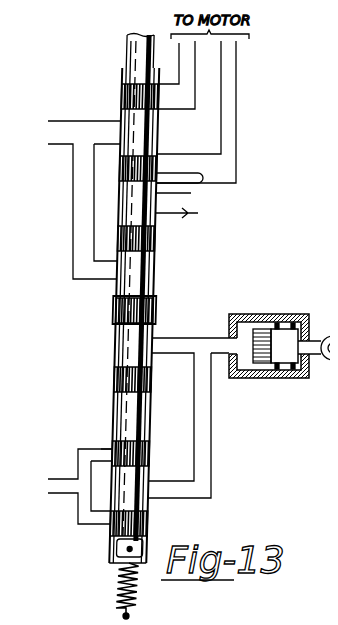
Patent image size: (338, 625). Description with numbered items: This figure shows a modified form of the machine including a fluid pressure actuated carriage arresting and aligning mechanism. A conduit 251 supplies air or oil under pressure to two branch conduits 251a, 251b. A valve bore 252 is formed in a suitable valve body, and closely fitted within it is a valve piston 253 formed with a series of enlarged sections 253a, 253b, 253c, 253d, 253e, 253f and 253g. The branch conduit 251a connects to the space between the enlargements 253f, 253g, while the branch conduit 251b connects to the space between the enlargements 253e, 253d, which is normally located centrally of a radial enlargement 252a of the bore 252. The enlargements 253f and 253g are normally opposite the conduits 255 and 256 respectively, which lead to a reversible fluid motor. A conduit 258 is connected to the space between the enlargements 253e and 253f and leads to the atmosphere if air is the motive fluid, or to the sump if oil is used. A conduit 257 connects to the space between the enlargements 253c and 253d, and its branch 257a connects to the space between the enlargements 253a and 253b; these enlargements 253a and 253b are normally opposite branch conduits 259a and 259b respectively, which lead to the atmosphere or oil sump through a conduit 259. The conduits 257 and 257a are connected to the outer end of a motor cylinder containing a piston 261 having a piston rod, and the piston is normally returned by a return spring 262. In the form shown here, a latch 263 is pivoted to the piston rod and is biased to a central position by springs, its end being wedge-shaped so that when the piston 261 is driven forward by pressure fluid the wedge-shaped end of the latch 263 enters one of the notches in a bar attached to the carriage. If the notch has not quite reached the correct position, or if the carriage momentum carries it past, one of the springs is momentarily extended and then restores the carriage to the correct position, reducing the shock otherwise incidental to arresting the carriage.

The conduit 251 is at (65, 118).
The branch conduit 251a is at (108, 120).
The branch conduit 251b is at (96, 278).
The valve bore 252 is at (110, 562).
The radial enlargement 252a is at (156, 300).
The valve piston 253 is at (156, 414).
The enlarged section 253a is at (148, 523).
The enlarged section 253b is at (148, 454).
The enlarged section 253c is at (150, 378).
The enlarged section 253d is at (155, 305).
The enlarged section 253e is at (154, 245).
The enlarged section 253f is at (205, 186).
The enlarged section 253g is at (121, 88).
The conduit 255 is at (200, 140).
The conduit 256 is at (177, 108).
The conduit 257 is at (218, 337).
The branch conduit 257a is at (211, 421).
The conduit 258 is at (180, 218).
The conduit 259 is at (54, 478).
The branch conduit 259a is at (99, 523).
The branch conduit 259b is at (100, 448).
The piston 261 is at (248, 314).
The return spring 262 is at (282, 316).
The latch 263 is at (331, 341).